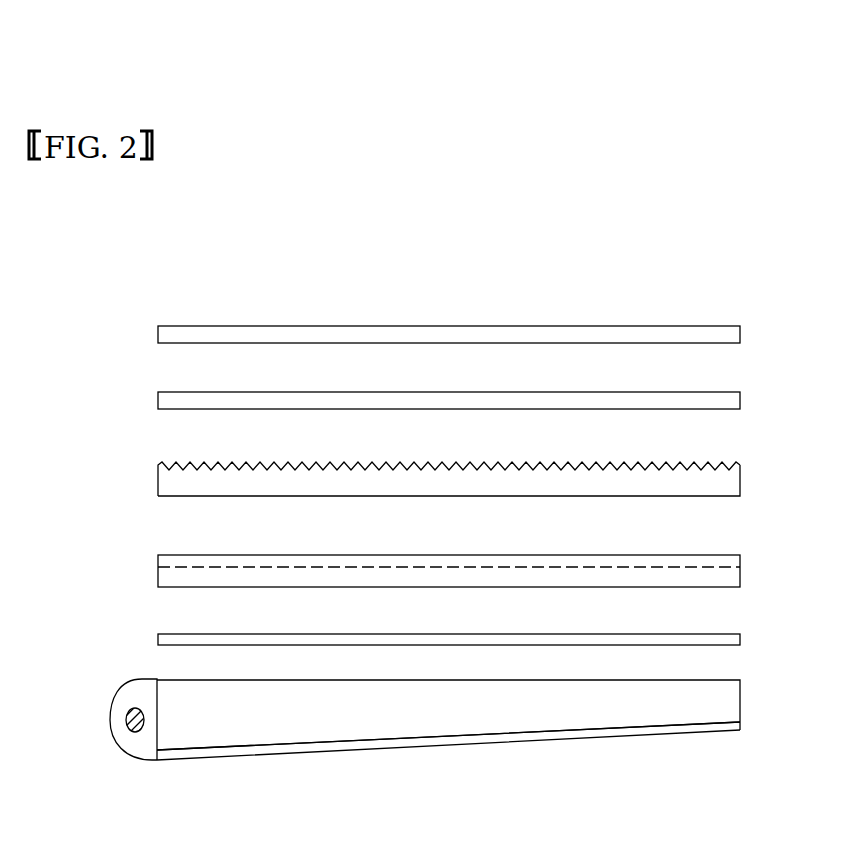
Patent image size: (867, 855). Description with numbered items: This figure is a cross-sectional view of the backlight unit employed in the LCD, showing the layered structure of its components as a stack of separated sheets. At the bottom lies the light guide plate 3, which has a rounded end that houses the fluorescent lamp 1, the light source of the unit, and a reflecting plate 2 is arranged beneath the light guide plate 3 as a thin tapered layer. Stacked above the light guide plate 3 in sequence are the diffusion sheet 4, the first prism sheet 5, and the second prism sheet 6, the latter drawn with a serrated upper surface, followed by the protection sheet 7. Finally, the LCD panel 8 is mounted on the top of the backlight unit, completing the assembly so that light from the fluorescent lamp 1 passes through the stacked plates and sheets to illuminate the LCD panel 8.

The fluorescent lamp 1 is at (135, 732).
The reflecting plate 2 is at (740, 726).
The light guide plate 3 is at (740, 699).
The diffusion sheet 4 is at (740, 641).
The first prism sheet 5 is at (740, 577).
The second prism sheet 6 is at (740, 483).
The protection sheet 7 is at (740, 399).
The LCD panel 8 is at (740, 335).